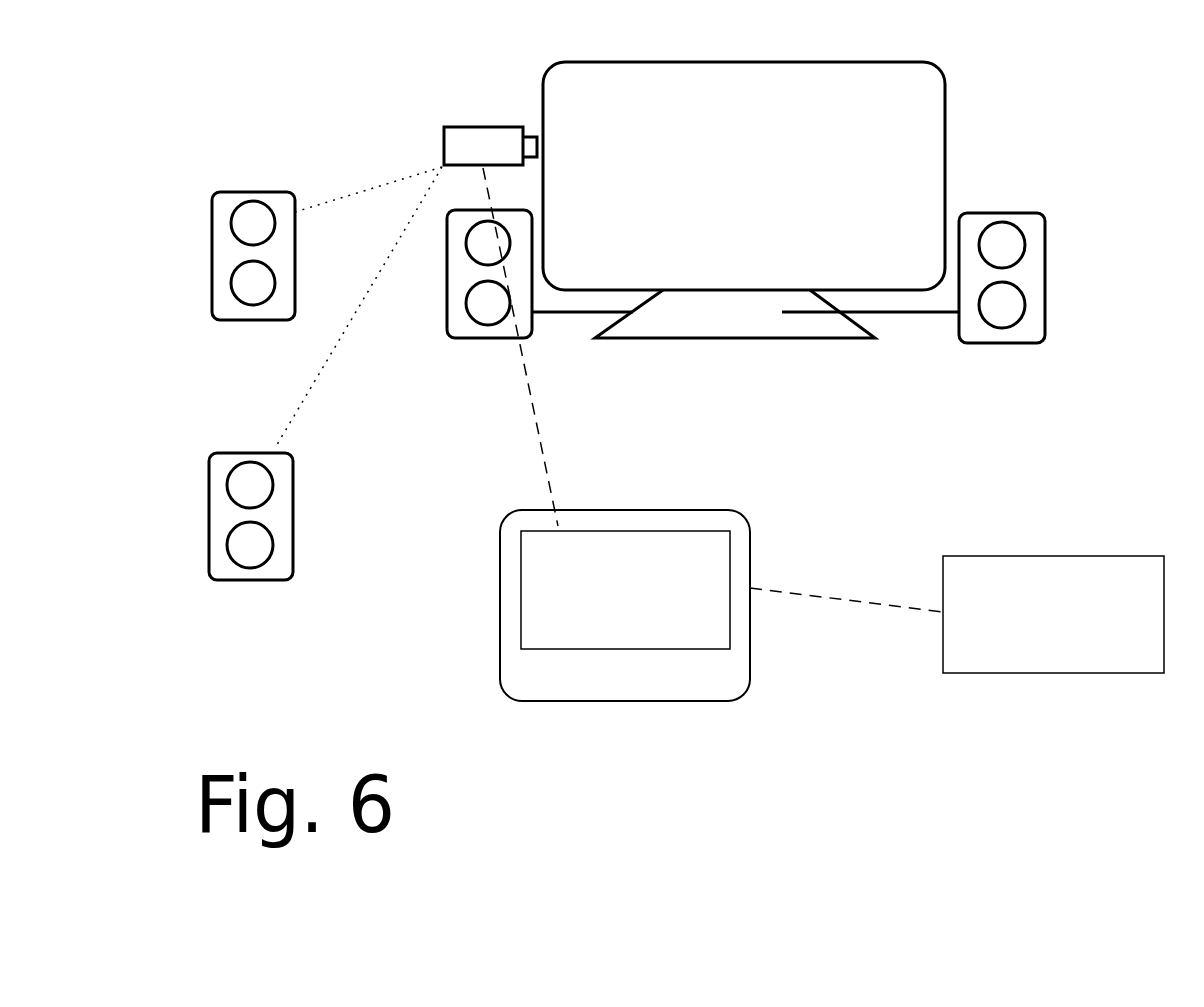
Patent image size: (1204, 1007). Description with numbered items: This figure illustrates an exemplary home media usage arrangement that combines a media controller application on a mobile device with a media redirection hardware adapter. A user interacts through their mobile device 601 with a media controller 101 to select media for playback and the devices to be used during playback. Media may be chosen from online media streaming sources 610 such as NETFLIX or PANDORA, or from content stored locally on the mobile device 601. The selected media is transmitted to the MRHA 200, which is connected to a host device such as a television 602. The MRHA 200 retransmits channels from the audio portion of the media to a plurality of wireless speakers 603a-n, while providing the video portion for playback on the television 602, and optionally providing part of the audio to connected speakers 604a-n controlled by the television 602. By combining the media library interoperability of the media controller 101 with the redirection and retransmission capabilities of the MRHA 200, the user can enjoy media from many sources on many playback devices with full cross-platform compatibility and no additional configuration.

The media controller 101 is at (521, 588).
The MRHA 200 is at (444, 138).
The mobile device 601 is at (599, 654).
The television 602 is at (543, 90).
The wireless speakers 603a-n is at (257, 321).
The connected speakers 604a-n is at (447, 310).
The online media streaming sources 610 is at (1003, 556).